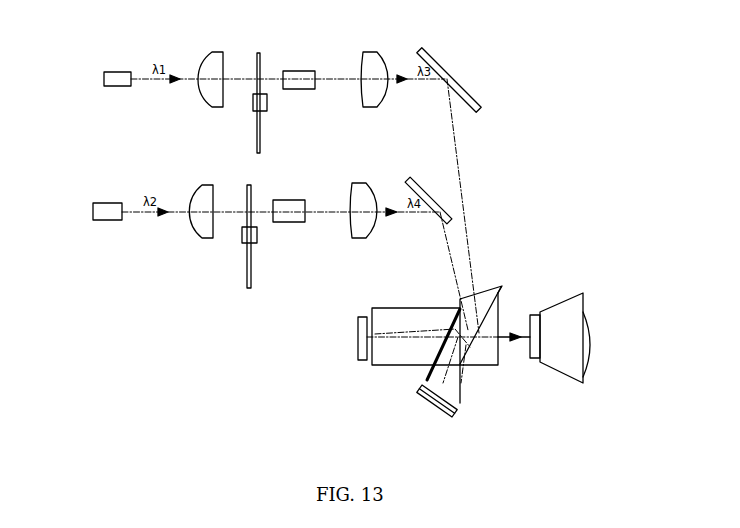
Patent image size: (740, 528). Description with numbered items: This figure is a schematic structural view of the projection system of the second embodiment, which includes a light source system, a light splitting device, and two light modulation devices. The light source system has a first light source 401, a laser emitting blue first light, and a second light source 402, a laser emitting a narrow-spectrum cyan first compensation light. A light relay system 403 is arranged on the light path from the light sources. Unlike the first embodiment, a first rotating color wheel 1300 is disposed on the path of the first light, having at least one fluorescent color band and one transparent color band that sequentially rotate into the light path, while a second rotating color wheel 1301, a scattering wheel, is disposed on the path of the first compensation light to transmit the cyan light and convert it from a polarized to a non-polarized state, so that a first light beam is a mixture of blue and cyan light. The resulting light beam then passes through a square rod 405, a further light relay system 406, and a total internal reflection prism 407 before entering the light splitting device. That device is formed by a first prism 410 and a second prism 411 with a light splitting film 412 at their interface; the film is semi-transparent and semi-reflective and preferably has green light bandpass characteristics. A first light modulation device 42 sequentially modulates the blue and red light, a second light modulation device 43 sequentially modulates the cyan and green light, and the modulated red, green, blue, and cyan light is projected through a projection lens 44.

The first light source 401 is at (110, 80).
The second light source 402 is at (105, 210).
The light relay system 403 is at (215, 63).
The square rod 405 is at (308, 70).
The light relay system 406 is at (370, 65).
The total internal reflection (TIR) prism 407 is at (427, 53).
The first rotating color wheel 1300 is at (260, 138).
The second rotating color wheel 1301 is at (247, 272).
The first prism 410 is at (418, 308).
The second prism 411 is at (460, 404).
The light splitting film 412 is at (432, 368).
The first light modulation device 42 is at (362, 395).
The second light modulation device 43 is at (440, 408).
The projection lens 44 is at (590, 352).